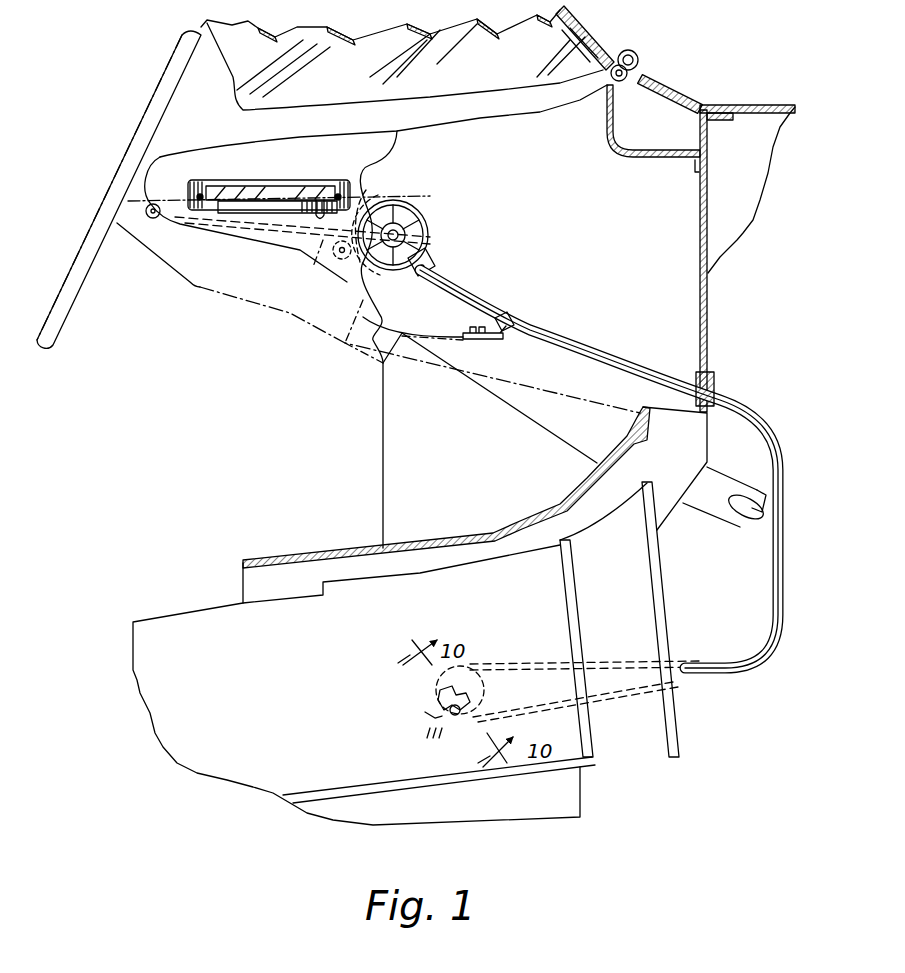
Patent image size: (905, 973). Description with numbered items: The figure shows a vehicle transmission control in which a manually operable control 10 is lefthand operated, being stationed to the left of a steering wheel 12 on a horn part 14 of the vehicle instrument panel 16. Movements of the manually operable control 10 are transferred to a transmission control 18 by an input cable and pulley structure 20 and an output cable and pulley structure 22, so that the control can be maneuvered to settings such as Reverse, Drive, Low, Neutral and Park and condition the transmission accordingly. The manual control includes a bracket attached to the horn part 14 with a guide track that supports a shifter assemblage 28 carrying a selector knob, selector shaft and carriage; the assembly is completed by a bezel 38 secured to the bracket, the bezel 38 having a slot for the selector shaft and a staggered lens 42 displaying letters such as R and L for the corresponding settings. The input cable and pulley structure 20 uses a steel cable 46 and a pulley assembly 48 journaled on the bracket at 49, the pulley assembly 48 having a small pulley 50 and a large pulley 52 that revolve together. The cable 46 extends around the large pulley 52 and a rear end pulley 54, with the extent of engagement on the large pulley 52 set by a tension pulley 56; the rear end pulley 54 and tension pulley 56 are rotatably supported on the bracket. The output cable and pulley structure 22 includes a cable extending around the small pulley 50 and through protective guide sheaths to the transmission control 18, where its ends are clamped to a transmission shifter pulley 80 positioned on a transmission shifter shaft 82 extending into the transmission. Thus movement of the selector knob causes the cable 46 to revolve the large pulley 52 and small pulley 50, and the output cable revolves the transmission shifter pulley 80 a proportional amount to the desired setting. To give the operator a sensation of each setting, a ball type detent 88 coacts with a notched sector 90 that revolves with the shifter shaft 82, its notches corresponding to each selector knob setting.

The manually operable control 10 is at (289, 175).
The steering wheel 12 is at (58, 350).
The horn part 14 is at (206, 178).
The instrument panel 16 is at (605, 130).
The transmission control 18 is at (478, 655).
The input cable and pulley structure 20 is at (366, 190).
The output cable and pulley structure 22 is at (463, 284).
The shifter assemblage 28 is at (319, 214).
The bezel 38 is at (240, 192).
The lens 42 is at (278, 186).
The cable 46 is at (338, 262).
The pulley assembly 48 is at (432, 227).
The journal 49 is at (393, 247).
The small pulley 50 is at (428, 234).
The large pulley 52 is at (395, 221).
The rear end pulley 54 is at (172, 232).
The tension pulley 56 is at (393, 339).
The transmission shifter pulley 80 is at (490, 700).
The transmission shifter shaft 82 is at (438, 694).
The detent 88 is at (445, 722).
The notched sector 90 is at (460, 716).